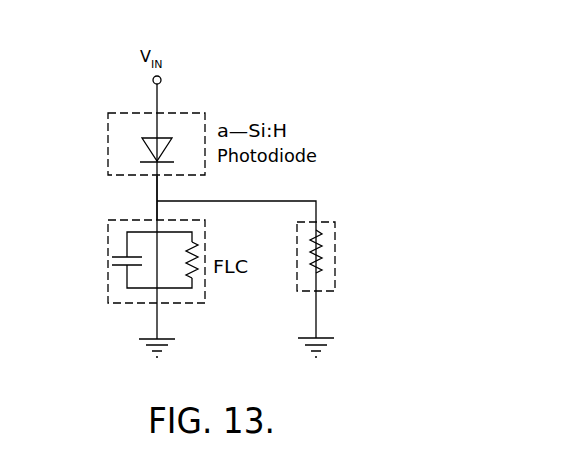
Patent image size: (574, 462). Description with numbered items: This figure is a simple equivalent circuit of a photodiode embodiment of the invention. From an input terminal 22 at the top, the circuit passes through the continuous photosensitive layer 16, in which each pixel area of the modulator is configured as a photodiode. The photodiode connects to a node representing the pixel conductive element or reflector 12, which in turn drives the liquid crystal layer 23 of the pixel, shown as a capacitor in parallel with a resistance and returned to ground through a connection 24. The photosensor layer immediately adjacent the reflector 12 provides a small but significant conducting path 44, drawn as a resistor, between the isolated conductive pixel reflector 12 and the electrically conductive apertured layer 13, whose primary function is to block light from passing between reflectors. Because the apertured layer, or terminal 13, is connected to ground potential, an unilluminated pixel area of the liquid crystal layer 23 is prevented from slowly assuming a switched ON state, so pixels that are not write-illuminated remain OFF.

The input terminal (V_IN) 22 is at (153, 81).
The continuous photosensitive layer 16 is at (108, 144).
The pixel conductive elements or reflectors 12 is at (152, 187).
The liquid crystal layer 23 is at (108, 280).
The ground connection of FLC cell 24 is at (157, 315).
The conducting path 44 is at (297, 237).
The apertured layer 13 is at (316, 317).